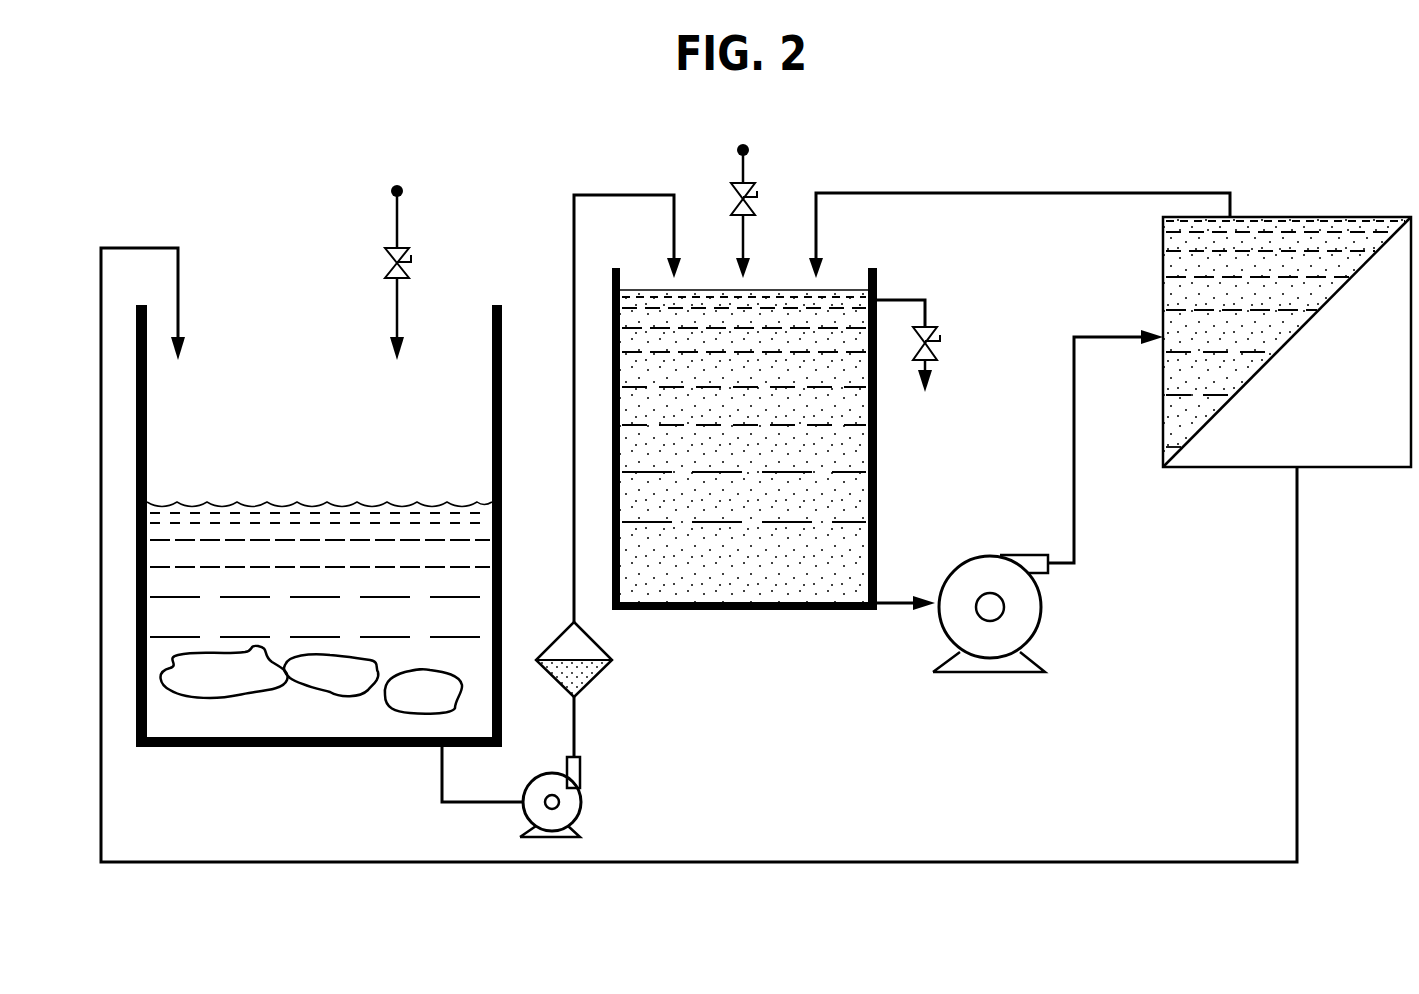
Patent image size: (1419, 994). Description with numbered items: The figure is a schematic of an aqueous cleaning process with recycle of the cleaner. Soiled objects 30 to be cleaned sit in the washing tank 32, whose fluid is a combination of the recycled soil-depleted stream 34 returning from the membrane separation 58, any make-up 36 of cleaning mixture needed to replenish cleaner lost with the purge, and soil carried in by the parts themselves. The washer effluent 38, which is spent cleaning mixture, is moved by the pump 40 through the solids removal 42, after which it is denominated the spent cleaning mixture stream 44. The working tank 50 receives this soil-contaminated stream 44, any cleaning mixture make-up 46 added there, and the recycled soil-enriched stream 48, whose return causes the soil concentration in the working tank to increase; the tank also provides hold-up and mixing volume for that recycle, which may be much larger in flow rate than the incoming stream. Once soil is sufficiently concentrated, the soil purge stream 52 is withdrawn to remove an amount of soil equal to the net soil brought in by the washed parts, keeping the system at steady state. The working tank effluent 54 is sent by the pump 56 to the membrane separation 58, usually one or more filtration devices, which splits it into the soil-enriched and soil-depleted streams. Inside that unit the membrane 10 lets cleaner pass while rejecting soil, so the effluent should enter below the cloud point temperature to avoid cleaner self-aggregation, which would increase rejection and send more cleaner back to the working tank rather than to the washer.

The membrane 10 is at (1310, 331).
The soiled objects 30 is at (383, 698).
The washing tank 32 is at (197, 747).
The recycled soil-depleted stream 34 is at (180, 296).
The make-up of cleaning mixture 36 is at (397, 307).
The washer effluent 38 is at (440, 783).
The pump 40 is at (542, 773).
The solids removal 42 is at (596, 640).
The spent cleaning mixture stream 44 is at (620, 192).
The cleaning mixture make-up 46 is at (735, 190).
The recycled soil-enriched stream 48 is at (818, 232).
The working tank 50 is at (742, 612).
The soil purge stream 52 is at (907, 298).
The working tank effluent stream 54 is at (893, 607).
The pump 56 is at (1041, 612).
The membrane separation 58 is at (1307, 217).